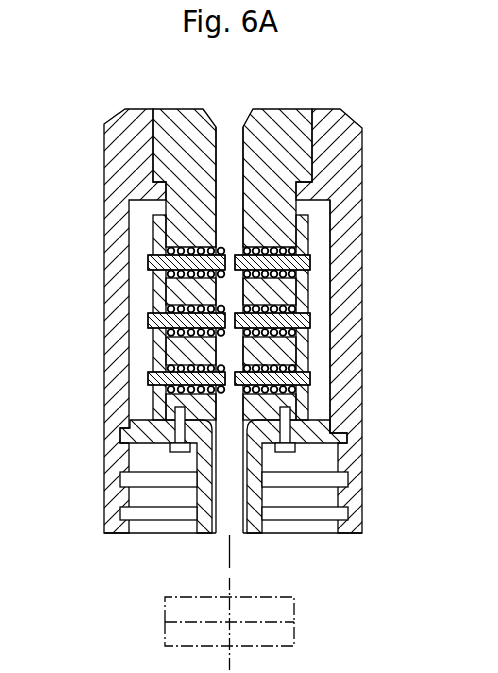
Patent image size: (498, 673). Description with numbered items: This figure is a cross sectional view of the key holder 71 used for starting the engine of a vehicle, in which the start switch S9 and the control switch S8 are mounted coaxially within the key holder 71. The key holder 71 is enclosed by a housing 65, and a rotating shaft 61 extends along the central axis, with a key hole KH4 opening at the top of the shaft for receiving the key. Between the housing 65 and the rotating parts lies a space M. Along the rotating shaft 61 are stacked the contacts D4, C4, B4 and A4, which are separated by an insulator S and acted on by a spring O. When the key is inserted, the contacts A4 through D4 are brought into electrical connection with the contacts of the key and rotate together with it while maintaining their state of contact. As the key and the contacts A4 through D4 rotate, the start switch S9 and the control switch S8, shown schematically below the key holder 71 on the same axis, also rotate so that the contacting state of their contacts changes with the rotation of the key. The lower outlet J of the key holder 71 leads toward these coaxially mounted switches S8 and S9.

The rotating shaft 61 is at (173, 116).
The central bore / channel KH4 is at (233, 128).
The housing 65 is at (355, 146).
The spring O is at (290, 246).
The insulator S is at (308, 292).
The contact D4 is at (148, 263).
The contact C4 is at (148, 320).
The contact B4 is at (148, 380).
The contact A4 is at (310, 378).
The space M is at (320, 407).
The key holder 71 is at (368, 496).
The outlet opening J is at (224, 528).
The control switch S8 is at (292, 600).
The start switch S9 is at (292, 630).